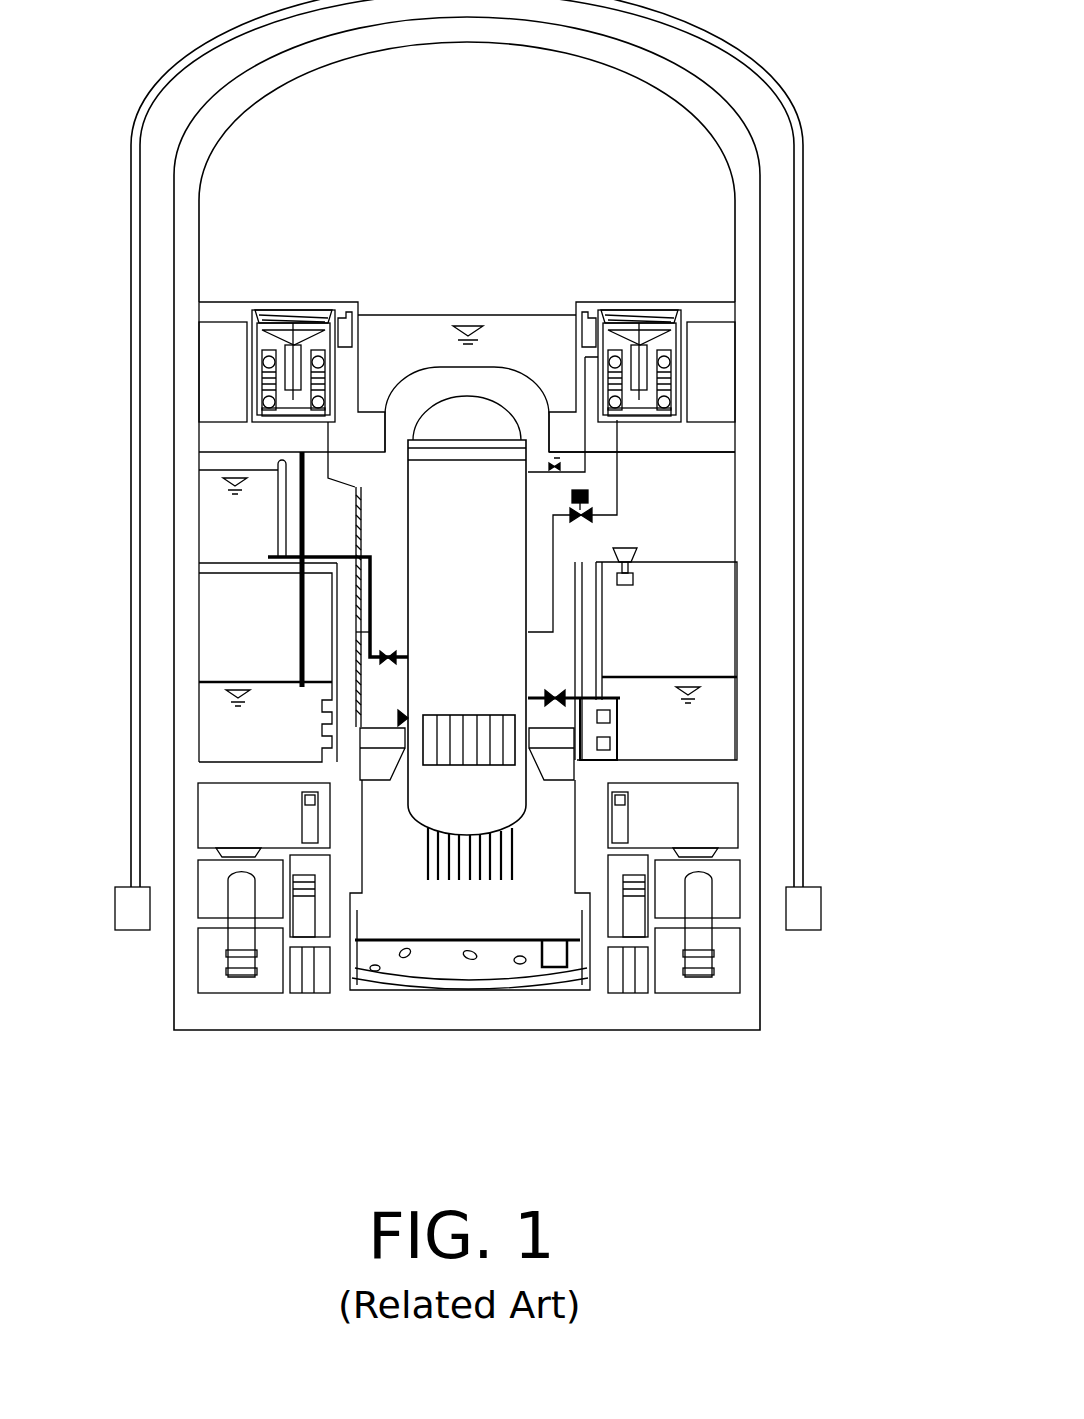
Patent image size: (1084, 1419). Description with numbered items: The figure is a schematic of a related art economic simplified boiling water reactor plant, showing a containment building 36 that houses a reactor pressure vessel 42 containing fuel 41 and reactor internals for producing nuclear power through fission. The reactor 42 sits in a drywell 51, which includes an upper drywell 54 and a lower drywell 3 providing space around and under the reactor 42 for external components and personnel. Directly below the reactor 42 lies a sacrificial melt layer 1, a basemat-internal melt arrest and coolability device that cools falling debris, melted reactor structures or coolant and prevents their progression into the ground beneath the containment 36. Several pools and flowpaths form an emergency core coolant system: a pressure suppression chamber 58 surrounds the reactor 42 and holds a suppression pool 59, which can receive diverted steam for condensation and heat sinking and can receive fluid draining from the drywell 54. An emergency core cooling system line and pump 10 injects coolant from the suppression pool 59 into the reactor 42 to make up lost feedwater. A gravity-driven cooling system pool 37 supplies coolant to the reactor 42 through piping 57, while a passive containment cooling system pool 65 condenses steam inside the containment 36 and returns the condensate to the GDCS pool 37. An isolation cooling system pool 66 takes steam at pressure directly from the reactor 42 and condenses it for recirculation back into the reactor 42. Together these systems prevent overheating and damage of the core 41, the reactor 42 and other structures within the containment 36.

The sacrificial melt layer 1 is at (395, 962).
The lower drywell 3 is at (560, 873).
The emergency core cooling system line and pump 10 is at (567, 687).
The containment building 36 is at (792, 343).
The gravity-driven cooling system pool 37 is at (215, 513).
The fuel 41 is at (516, 740).
The reactor pressure vessel 42 is at (603, 587).
The drywell 51 is at (570, 552).
The upper drywell 54 is at (672, 467).
The piping 57 is at (327, 552).
The pressure suppression chamber 58 is at (715, 663).
The suppression pool 59 is at (223, 722).
The passive containment cooling system pool 65 is at (300, 318).
The isolation cooling system pool 66 is at (678, 337).